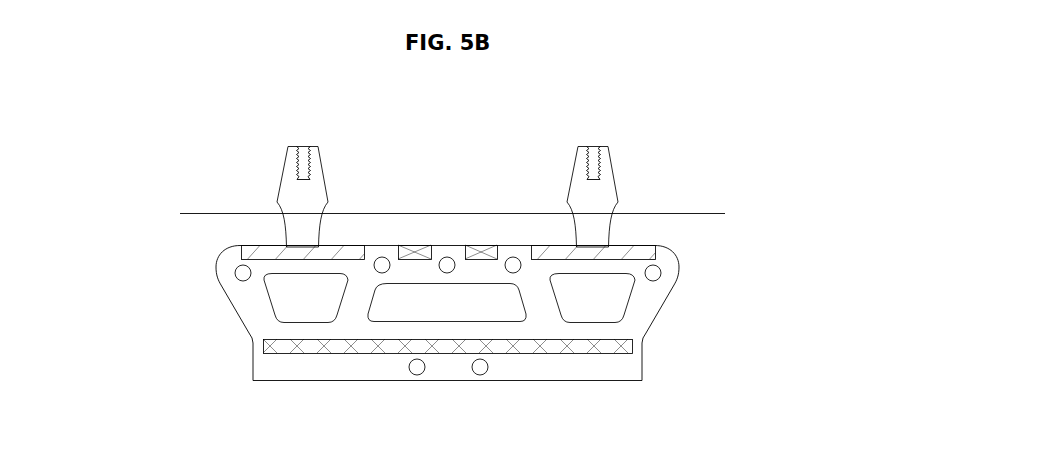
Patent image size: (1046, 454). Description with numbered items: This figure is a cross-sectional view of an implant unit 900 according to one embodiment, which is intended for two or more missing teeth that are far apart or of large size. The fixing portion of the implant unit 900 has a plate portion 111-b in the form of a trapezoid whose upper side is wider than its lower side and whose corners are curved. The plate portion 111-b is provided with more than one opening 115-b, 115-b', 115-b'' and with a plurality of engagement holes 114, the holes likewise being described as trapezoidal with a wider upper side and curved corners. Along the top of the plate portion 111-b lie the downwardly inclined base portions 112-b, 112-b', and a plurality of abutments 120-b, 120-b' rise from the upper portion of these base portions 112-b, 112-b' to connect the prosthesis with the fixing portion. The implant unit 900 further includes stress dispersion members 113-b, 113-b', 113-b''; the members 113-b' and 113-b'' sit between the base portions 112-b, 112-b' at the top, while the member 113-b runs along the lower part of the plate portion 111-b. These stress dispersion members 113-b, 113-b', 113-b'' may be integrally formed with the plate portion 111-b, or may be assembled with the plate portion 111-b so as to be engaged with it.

The implant unit 900 is at (205, 148).
The plate portion 111-b is at (635, 322).
The base portion 112-b is at (254, 241).
The base portion 112-b' is at (652, 241).
The stress dispersion member 113-b is at (448, 391).
The stress dispersion member 113-b' is at (414, 199).
The stress dispersion member 113-b'' is at (495, 199).
The engagement holes 114 is at (235, 273).
The opening 115-b is at (256, 300).
The opening 115-b' is at (409, 349).
The opening 115-b'' is at (643, 299).
The abutment 120-b is at (250, 197).
The abutment 120-b' is at (644, 197).